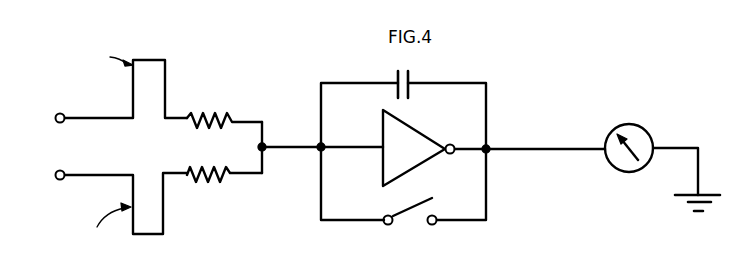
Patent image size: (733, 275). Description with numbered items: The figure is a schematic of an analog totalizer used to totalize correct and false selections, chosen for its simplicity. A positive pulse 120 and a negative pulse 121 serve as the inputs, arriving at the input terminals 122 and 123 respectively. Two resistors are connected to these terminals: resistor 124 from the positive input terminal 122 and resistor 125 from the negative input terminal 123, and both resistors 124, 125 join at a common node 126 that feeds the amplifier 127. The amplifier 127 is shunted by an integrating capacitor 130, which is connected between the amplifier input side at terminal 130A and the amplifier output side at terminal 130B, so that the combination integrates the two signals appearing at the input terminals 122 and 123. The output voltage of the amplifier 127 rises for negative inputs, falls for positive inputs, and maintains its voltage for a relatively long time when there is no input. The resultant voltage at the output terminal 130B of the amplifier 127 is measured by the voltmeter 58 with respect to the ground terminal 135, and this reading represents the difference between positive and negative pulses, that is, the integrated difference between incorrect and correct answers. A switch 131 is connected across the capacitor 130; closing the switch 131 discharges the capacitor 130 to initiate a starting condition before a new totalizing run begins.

The positive pulse 120 is at (152, 78).
The negative pulse 121 is at (153, 215).
The input terminal 122 is at (58, 113).
The input terminal 123 is at (58, 180).
The resistor 124 is at (213, 112).
The resistor 125 is at (205, 180).
The summing junction lead 126 is at (290, 150).
The amplifier 127 is at (408, 137).
The integrating capacitor 130 is at (412, 73).
The capacitor input terminal 130A is at (327, 150).
The capacitor output terminal 130B is at (490, 152).
The switch 131 is at (407, 213).
The voltmeter 58 is at (632, 132).
The ground terminal 135 is at (688, 202).